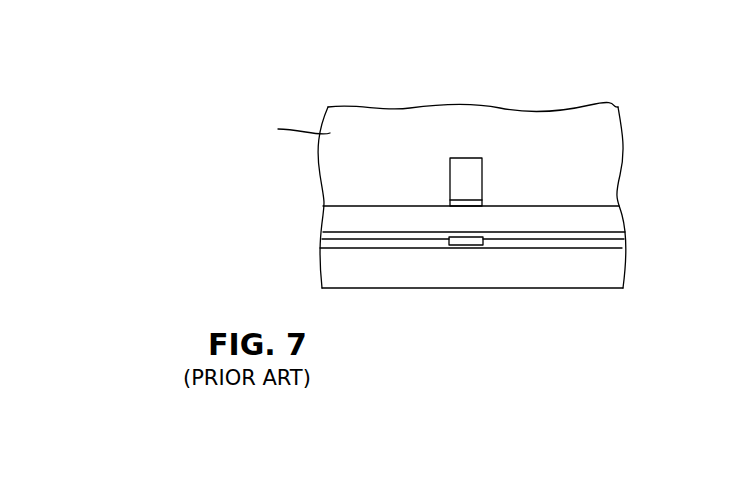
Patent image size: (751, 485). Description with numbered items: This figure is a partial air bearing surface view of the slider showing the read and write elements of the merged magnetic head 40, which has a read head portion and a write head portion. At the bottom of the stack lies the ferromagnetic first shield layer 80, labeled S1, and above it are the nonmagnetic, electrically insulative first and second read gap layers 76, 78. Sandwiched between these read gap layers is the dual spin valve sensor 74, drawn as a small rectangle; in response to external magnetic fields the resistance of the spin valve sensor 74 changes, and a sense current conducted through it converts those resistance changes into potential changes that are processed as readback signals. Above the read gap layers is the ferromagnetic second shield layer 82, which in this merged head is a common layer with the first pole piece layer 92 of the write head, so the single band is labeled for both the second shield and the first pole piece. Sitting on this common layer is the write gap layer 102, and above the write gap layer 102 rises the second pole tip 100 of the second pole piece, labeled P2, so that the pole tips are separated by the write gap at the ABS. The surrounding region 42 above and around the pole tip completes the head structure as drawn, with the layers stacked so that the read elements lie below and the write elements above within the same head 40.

The merged magnetic head 40 is at (642, 118).
The insulation/overcoat layer 42 is at (287, 130).
The dual spin valve sensor 74 is at (465, 245).
The first read gap layer 76 is at (380, 248).
The second read gap layer 78 is at (583, 237).
The first shield layer 80 is at (612, 269).
The second shield layer 82 is at (409, 219).
The first pole piece layer 92 is at (409, 219).
The second pole tip 100 is at (470, 163).
The write gap layer 102 is at (465, 203).
The second pole piece P2 is at (482, 182).
The first shield S1 is at (535, 269).